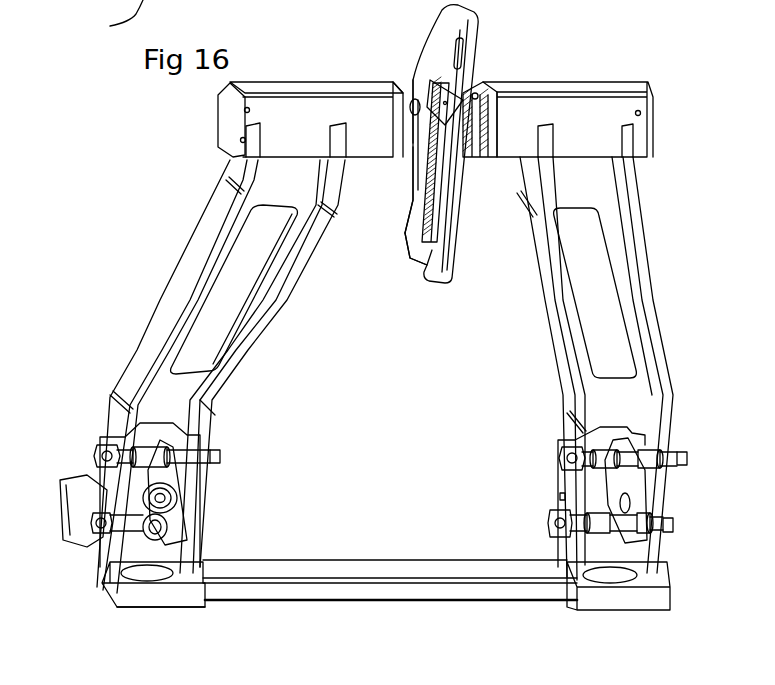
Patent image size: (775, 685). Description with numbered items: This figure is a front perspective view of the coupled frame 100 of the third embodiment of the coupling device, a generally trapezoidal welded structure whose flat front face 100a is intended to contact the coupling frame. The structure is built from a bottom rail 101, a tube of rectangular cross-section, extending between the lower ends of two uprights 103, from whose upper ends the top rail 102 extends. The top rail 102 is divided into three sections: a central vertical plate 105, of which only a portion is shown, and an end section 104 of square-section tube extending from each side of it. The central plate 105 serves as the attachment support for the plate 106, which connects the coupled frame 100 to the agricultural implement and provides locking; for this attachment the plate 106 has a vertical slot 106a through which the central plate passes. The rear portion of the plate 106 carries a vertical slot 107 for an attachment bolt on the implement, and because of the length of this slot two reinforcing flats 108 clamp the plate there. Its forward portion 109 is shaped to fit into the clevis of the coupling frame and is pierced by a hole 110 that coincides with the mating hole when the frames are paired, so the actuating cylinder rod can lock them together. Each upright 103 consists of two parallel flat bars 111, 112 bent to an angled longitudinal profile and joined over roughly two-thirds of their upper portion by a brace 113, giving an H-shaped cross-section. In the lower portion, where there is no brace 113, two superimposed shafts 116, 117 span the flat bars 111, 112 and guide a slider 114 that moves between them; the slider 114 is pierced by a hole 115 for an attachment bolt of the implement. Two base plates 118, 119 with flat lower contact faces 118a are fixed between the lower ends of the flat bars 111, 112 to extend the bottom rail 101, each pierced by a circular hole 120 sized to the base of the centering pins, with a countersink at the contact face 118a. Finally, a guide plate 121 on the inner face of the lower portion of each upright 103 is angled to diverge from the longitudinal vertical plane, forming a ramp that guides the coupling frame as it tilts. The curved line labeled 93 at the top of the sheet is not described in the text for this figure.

The lift arm 93 is at (109, 23).
The coupled frame 100 is at (176, 261).
The flat front face 100a is at (647, 297).
The bottom rail 101 is at (415, 567).
The top rail 102 is at (212, 125).
The upright 103 is at (290, 325).
The end section 104 is at (299, 88).
The central vertical plate 105 is at (478, 92).
The plate 106 is at (443, 265).
The vertical slot 106a is at (402, 165).
The vertical slot 107 is at (425, 236).
The reinforcing flat 108 is at (447, 130).
The forward portion 109 is at (417, 80).
The hole 110 is at (408, 107).
The flat bar 111 is at (157, 327).
The flat bar 112 is at (258, 347).
The brace 113 is at (197, 398).
The slider 114 is at (182, 508).
The hole 115 is at (160, 500).
The shaft 116 is at (645, 457).
The shaft 117 is at (590, 523).
The base plate 118 is at (180, 590).
The flat lower contact face 118a is at (143, 610).
The base plate 119 is at (617, 597).
The circular hole 120 is at (143, 573).
The guide plate 121 is at (70, 493).